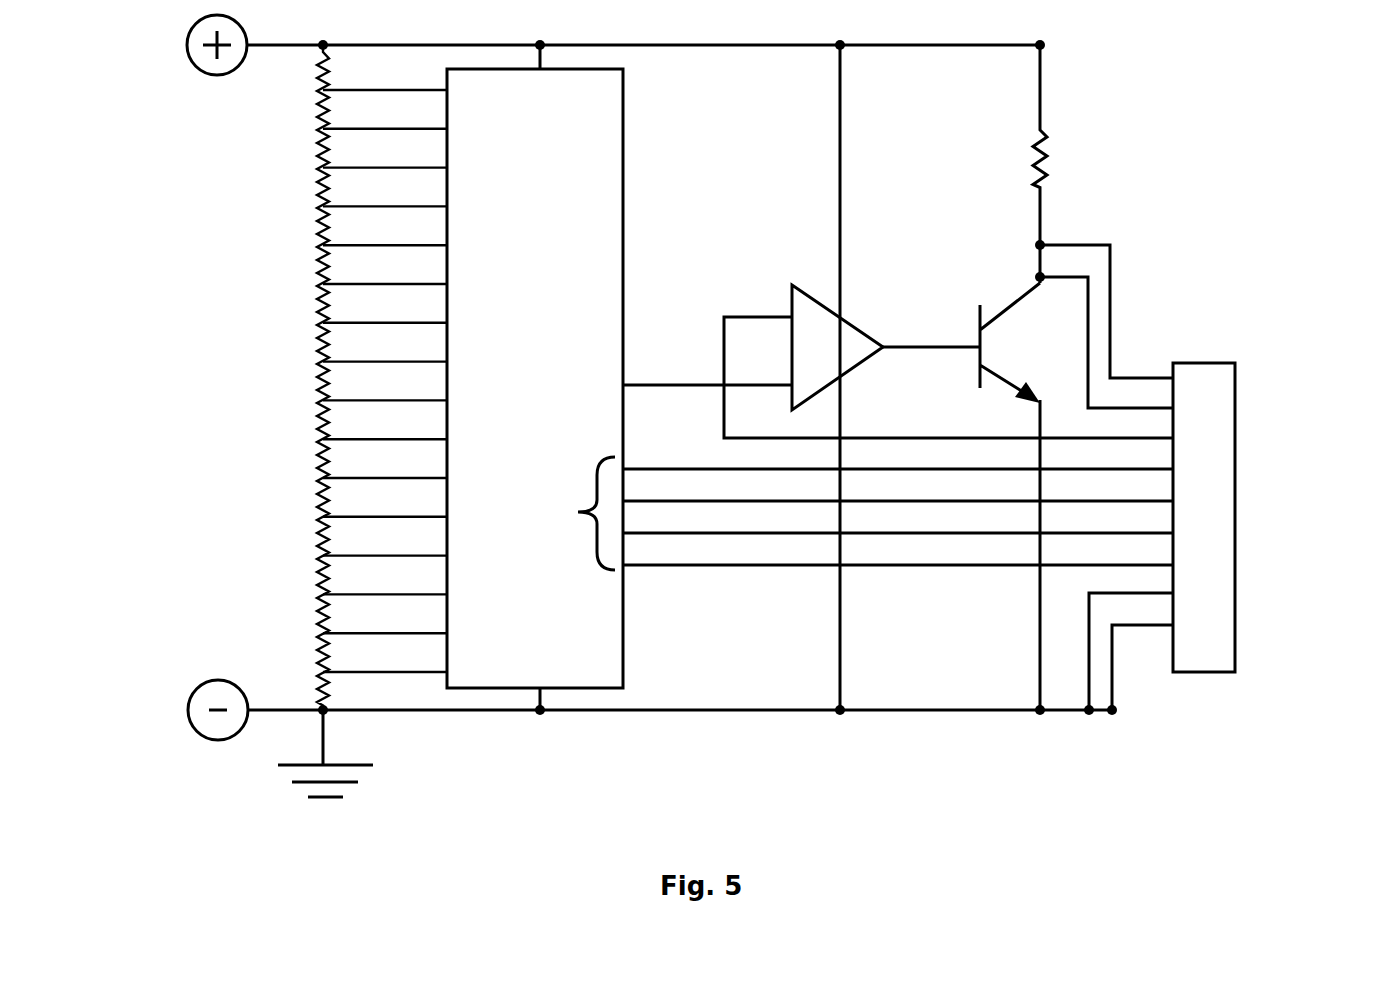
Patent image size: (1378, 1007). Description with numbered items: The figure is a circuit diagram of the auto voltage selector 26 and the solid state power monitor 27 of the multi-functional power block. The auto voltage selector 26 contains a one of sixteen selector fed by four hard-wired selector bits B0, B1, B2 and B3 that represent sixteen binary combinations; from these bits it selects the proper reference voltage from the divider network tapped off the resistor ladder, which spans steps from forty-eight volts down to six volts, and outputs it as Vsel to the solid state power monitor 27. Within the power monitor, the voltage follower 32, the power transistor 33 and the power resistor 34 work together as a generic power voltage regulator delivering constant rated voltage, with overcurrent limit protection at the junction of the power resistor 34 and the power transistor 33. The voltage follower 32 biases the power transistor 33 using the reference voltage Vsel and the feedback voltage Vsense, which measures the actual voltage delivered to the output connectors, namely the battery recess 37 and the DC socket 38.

The auto voltage selector 26 is at (712, 740).
The solid state power monitor 27 is at (965, 416).
The voltage follower 32 is at (794, 312).
The power transistor 33 is at (978, 340).
The power resistor 34 is at (1046, 155).
The battery recess 37 is at (1225, 479).
The DC socket 38 is at (1204, 517).